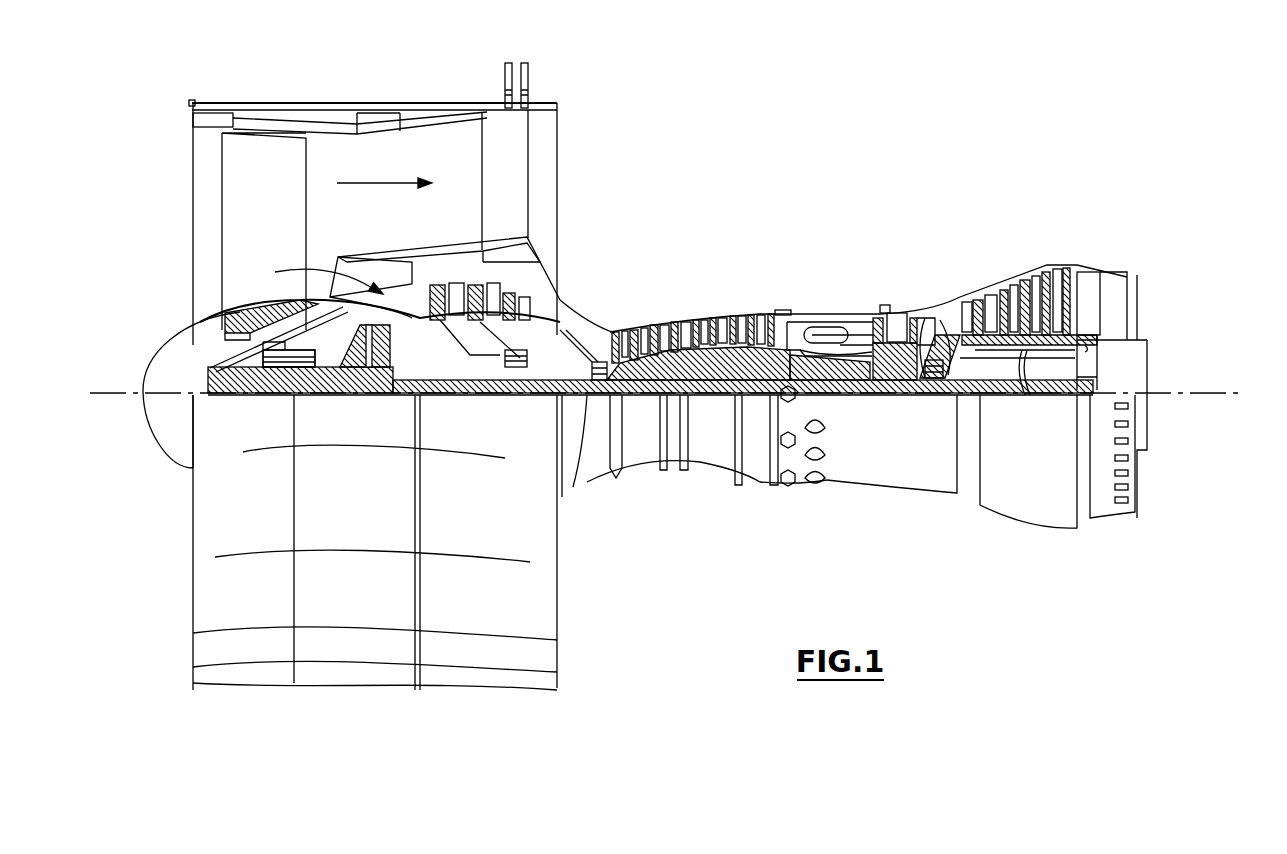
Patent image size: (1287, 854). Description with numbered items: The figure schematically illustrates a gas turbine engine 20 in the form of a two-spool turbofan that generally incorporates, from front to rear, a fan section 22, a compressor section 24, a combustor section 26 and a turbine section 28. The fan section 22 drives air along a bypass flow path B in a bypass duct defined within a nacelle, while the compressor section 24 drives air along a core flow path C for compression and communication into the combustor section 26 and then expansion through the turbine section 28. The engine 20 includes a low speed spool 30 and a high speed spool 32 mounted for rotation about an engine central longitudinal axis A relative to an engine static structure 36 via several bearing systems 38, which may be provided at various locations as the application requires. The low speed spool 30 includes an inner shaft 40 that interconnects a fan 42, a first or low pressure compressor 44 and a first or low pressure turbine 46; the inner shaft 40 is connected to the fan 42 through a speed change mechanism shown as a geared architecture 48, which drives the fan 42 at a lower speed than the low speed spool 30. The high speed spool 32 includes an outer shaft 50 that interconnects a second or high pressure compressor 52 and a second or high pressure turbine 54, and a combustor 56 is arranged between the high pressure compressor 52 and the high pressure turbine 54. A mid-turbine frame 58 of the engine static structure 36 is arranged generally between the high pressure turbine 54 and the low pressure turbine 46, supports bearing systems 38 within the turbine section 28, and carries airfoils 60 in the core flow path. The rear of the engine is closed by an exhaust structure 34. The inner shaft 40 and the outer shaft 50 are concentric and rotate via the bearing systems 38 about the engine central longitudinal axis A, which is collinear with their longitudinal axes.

The gas turbine engine 20 is at (838, 155).
The fan section 22 is at (178, 90).
The compressor section 24 is at (413, 230).
The combustor section 26 is at (867, 230).
The turbine section 28 is at (1093, 230).
The low speed spool 30 is at (714, 409).
The high speed spool 32 is at (757, 360).
The turbine exhaust case 34 is at (1028, 383).
The engine static structure 36 is at (755, 492).
The bearing systems 38 is at (277, 375).
The inner shaft 40 is at (578, 400).
The fan 42 is at (277, 234).
The low pressure compressor 44 is at (492, 293).
The low pressure turbine 46 is at (1023, 277).
The geared architecture 48 is at (380, 377).
The outer shaft 50 is at (843, 378).
The high pressure compressor 52 is at (688, 358).
The high pressure turbine 54 is at (893, 312).
The combustor 56 is at (828, 337).
The mid-turbine frame 58 is at (938, 306).
The airfoils 60 is at (982, 395).
The engine central longitudinal axis A is at (1228, 392).
The bypass flow path B is at (372, 183).
The core flow path C is at (318, 277).